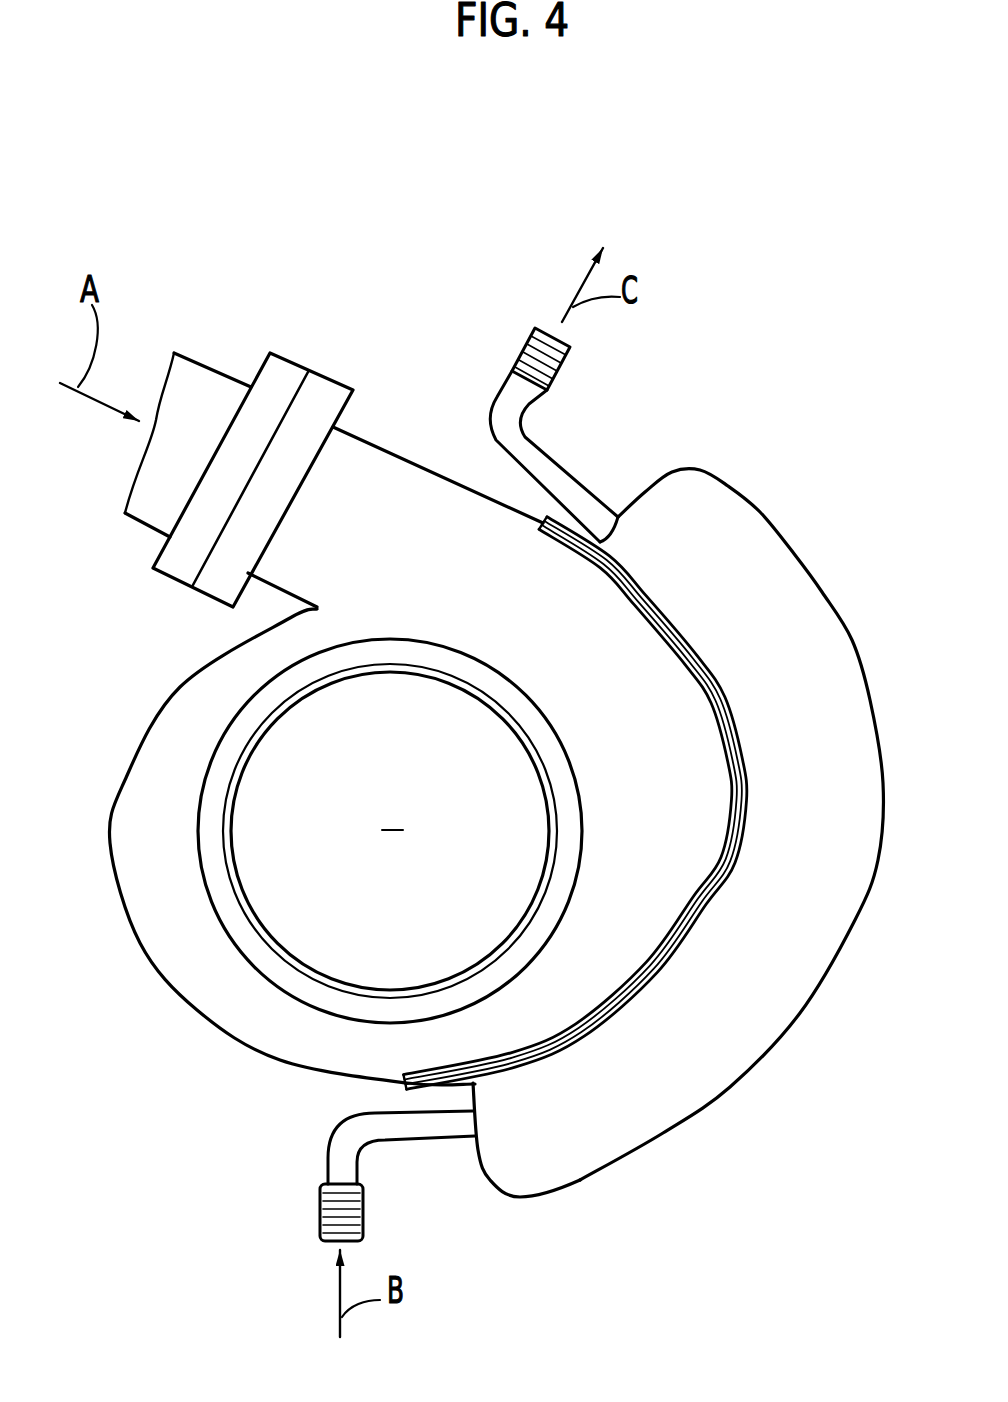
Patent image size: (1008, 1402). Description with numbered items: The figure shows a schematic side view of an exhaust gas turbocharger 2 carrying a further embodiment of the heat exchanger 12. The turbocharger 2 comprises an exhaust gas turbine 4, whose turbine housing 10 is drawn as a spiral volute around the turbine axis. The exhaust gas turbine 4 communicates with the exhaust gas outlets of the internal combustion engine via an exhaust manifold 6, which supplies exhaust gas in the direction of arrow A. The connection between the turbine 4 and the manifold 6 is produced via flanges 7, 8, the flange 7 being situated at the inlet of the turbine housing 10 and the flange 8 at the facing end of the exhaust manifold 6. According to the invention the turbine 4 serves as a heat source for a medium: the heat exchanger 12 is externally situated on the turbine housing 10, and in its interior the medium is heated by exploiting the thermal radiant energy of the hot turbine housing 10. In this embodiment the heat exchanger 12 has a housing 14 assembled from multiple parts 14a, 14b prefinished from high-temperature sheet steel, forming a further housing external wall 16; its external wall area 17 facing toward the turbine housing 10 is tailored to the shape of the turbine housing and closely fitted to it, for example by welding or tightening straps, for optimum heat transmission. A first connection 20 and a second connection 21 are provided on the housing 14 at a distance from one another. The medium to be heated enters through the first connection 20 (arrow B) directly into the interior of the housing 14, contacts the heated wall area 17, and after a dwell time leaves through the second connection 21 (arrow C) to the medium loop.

The exhaust gas turbocharger 2 is at (152, 686).
The exhaust gas turbine 4 is at (462, 840).
The exhaust manifold 6 is at (195, 373).
The flange 7 is at (318, 397).
The flange 8 is at (277, 370).
The turbine housing 10 is at (217, 979).
The heat exchanger 12 is at (642, 1098).
The housing 14 is at (732, 1087).
The housing part 14a is at (650, 970).
The housing part 14b is at (760, 990).
The housing external wall 16 is at (254, 1050).
The external wall area 17 is at (710, 918).
The first connection 20 is at (365, 1207).
The second connection 21 is at (553, 378).